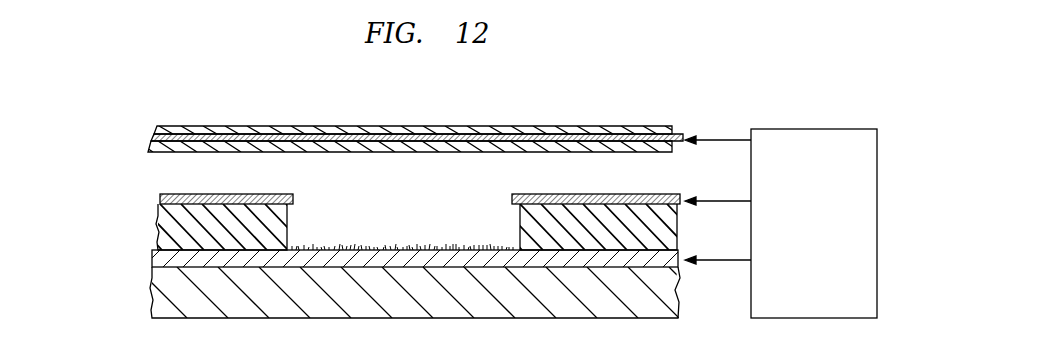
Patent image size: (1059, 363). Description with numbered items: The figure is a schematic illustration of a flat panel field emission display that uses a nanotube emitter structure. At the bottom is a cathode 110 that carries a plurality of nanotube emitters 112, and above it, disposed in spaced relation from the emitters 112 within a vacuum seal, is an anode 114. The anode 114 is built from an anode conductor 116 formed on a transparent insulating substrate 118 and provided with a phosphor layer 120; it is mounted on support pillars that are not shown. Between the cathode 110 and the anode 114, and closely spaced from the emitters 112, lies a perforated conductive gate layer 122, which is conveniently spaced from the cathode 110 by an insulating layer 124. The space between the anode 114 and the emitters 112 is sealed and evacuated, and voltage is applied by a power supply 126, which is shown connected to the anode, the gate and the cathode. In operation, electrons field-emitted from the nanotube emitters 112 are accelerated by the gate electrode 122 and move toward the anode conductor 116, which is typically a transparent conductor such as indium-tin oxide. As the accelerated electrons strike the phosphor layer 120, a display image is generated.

The cathode 110 is at (151, 262).
The nanotube emitters 112 is at (398, 250).
The anode 114 is at (113, 120).
The anode conductor 116 is at (688, 136).
The transparent insulating substrate 118 is at (402, 126).
The phosphor layer 120 is at (396, 154).
The perforated conductive gate layer 122 is at (222, 194).
The insulating layer 124 is at (156, 216).
The power supply 126 is at (846, 129).